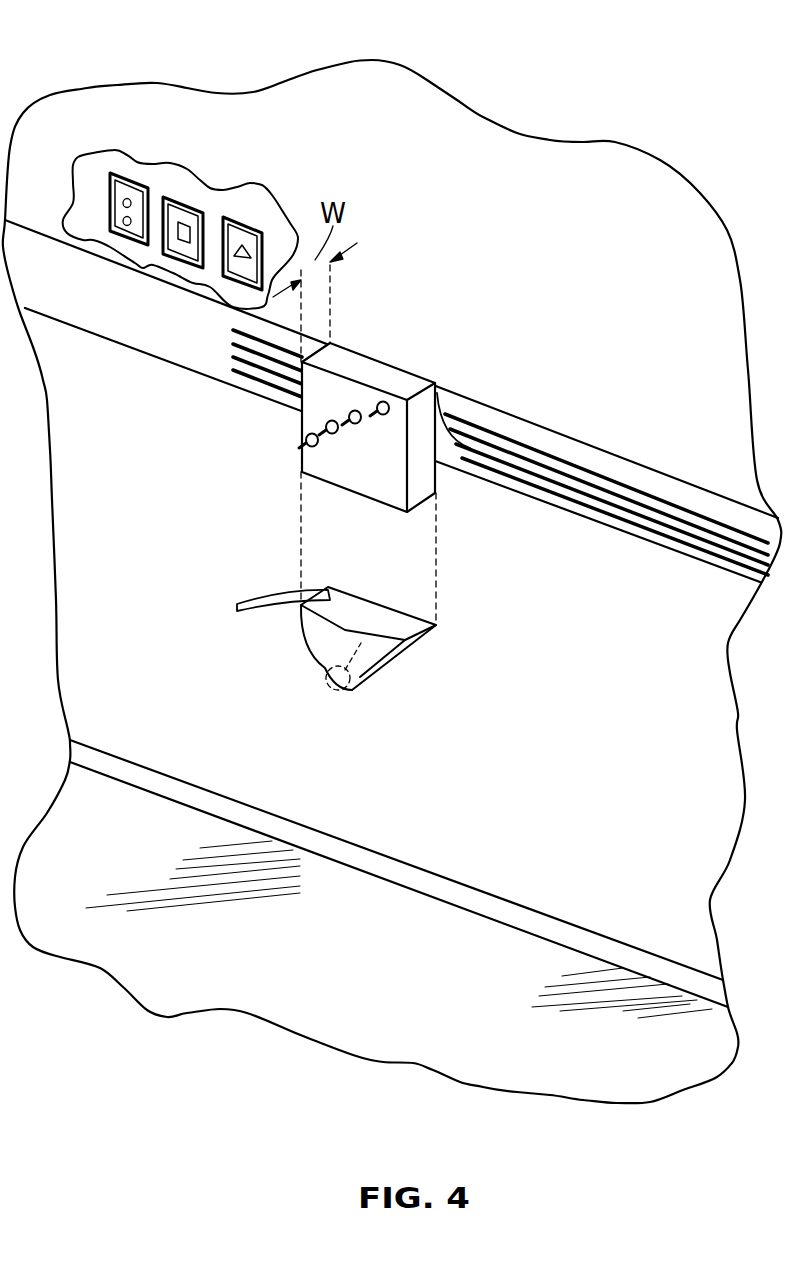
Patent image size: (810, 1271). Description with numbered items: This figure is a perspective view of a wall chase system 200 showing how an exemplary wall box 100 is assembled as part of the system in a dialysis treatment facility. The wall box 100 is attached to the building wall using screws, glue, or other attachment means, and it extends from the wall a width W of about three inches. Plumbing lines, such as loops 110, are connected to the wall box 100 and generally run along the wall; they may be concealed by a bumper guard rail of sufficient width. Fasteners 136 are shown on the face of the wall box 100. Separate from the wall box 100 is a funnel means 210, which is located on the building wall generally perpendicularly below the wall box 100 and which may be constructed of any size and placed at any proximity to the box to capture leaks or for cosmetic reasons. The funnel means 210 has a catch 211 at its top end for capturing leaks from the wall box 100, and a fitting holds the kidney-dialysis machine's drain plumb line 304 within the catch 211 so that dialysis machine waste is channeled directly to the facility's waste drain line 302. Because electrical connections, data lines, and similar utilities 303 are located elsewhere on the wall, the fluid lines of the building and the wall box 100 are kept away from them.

The wall chase system 200 is at (128, 50).
The utilities 303 is at (222, 190).
The wall box 100 is at (377, 367).
The fasteners / screws 136 is at (302, 446).
The loops 110 is at (477, 460).
The catch 211 is at (372, 620).
The funnel means 210 is at (298, 632).
The waste drain line 302 is at (350, 692).
The drain plumb line 304 is at (262, 592).